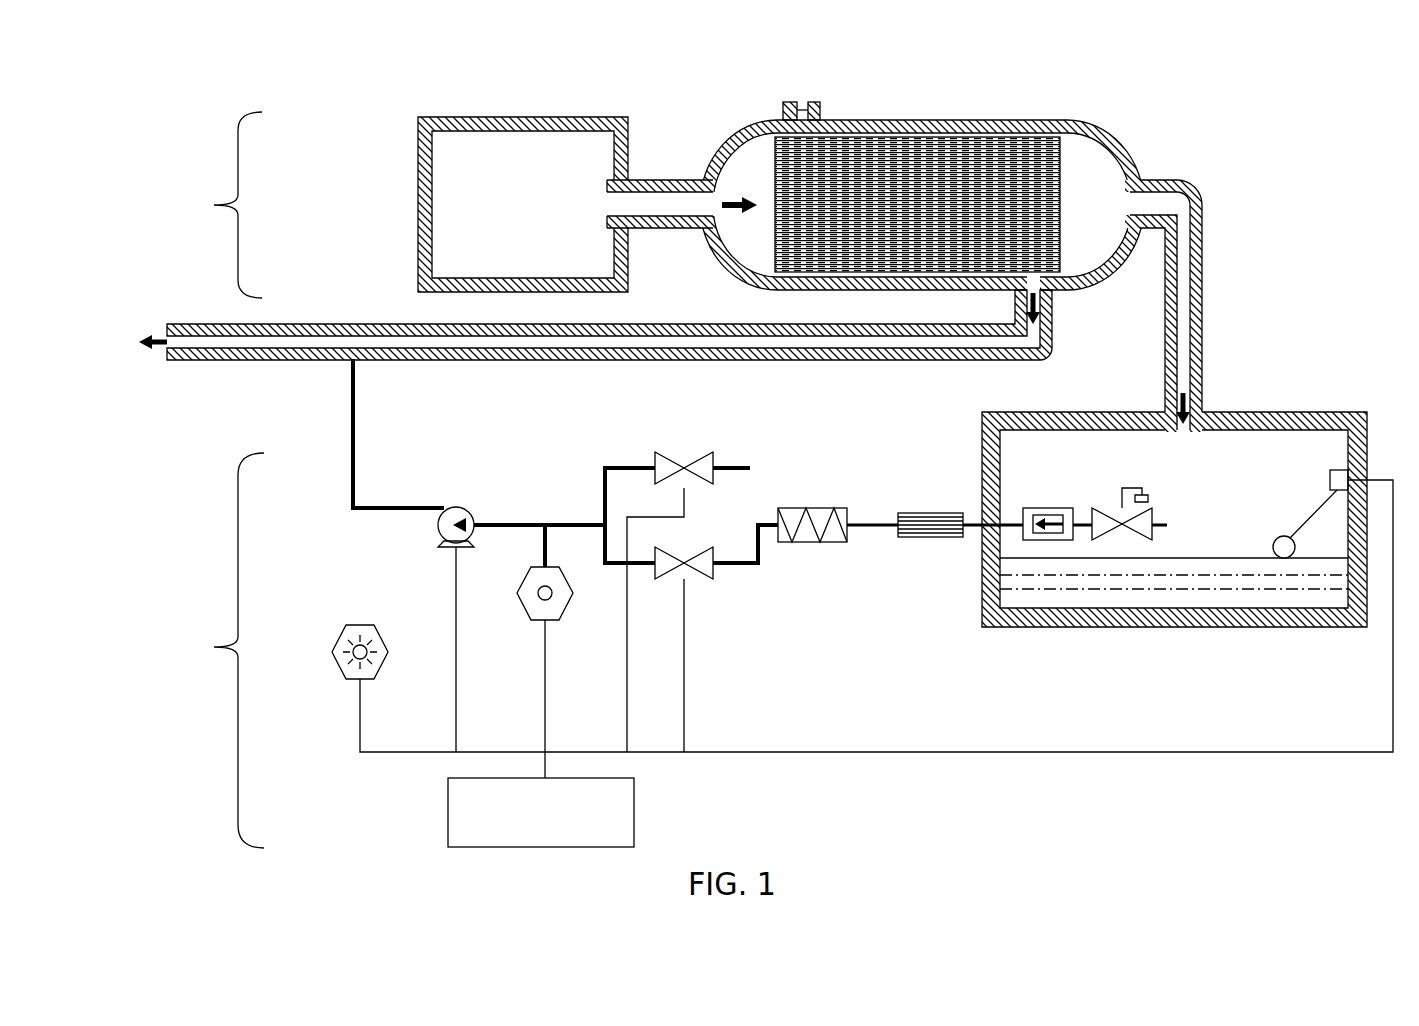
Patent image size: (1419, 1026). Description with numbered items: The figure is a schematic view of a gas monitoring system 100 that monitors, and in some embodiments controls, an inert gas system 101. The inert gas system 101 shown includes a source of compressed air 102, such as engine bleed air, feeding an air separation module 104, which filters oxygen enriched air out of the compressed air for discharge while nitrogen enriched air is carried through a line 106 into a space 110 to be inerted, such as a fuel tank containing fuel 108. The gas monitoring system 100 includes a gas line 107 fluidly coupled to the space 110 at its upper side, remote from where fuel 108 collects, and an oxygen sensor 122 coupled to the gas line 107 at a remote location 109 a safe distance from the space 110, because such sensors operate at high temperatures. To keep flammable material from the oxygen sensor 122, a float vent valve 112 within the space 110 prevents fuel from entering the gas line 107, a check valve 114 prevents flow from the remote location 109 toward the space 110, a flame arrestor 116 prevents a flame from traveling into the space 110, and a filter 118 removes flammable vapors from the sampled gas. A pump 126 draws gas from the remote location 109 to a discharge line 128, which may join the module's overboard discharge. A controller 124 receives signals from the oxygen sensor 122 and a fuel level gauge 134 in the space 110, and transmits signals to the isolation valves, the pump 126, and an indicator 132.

The gas monitoring system 100 is at (211, 650).
The inert gas system 101 is at (213, 205).
The source of compressed air 102 is at (491, 115).
The air separation module 104 is at (912, 118).
The NEA supply pipe 106 is at (1187, 268).
The gas line 107 is at (878, 522).
The fuel 108 is at (1200, 590).
The remote location 109 is at (545, 520).
The space to be inerted 110 is at (1310, 627).
The float vent valve 112 is at (1110, 540).
The check valve 114 is at (1050, 540).
The flame arrestor 116 is at (940, 537).
The filter 118 is at (800, 542).
The oxygen sensor 122 is at (528, 618).
The controller 124 is at (634, 812).
The pump 126 is at (440, 530).
The discharge line 128 is at (353, 462).
The indicator 132 is at (333, 652).
The fuel level gauge 134 is at (1350, 430).